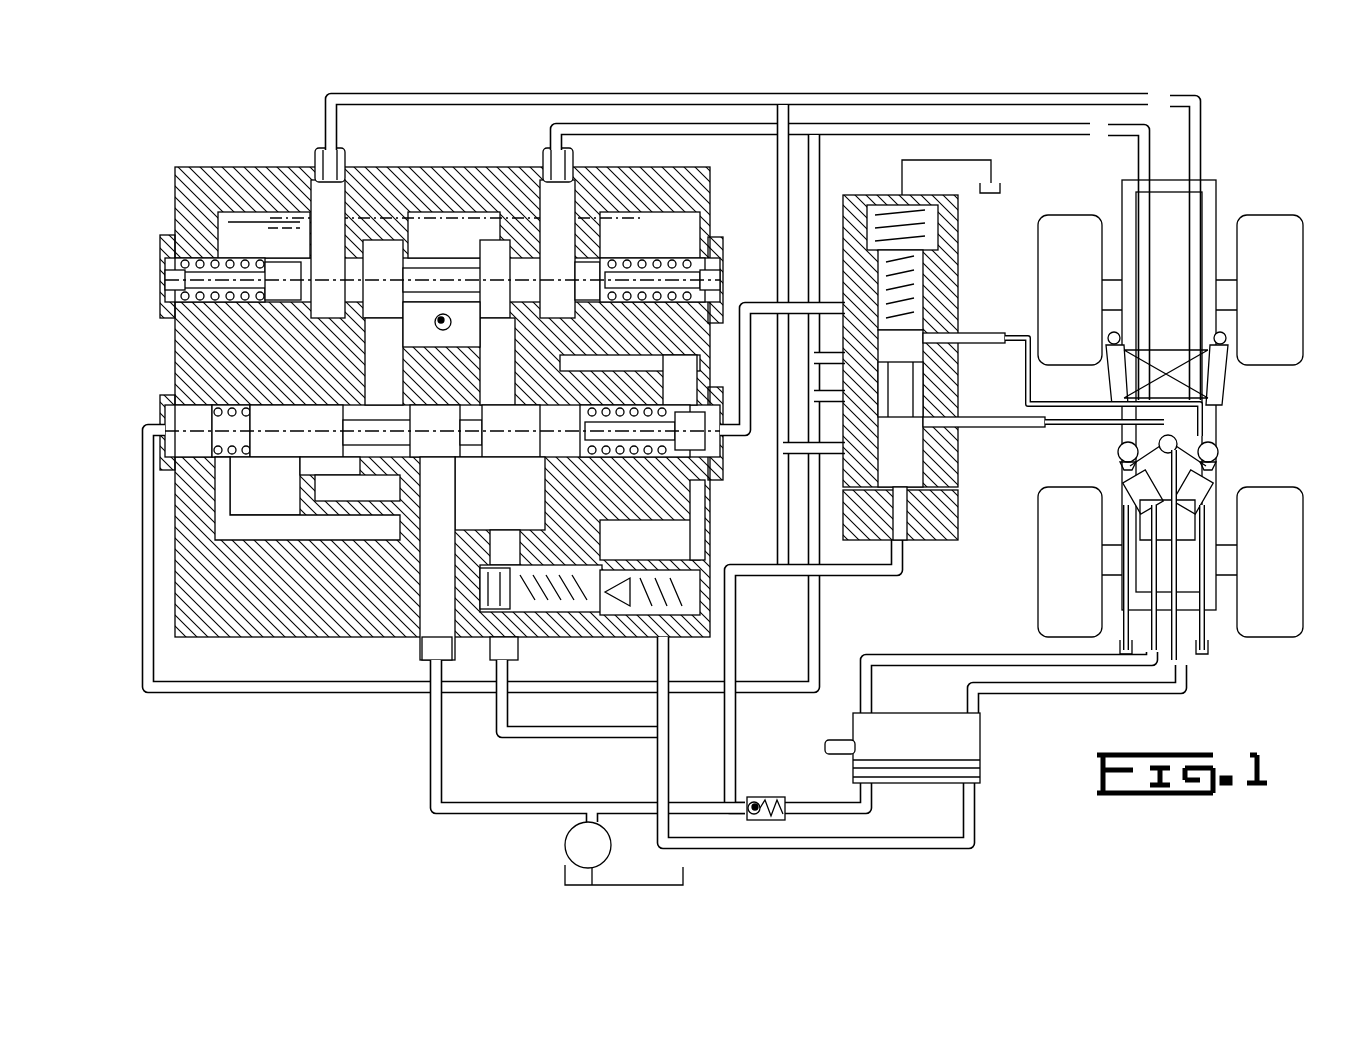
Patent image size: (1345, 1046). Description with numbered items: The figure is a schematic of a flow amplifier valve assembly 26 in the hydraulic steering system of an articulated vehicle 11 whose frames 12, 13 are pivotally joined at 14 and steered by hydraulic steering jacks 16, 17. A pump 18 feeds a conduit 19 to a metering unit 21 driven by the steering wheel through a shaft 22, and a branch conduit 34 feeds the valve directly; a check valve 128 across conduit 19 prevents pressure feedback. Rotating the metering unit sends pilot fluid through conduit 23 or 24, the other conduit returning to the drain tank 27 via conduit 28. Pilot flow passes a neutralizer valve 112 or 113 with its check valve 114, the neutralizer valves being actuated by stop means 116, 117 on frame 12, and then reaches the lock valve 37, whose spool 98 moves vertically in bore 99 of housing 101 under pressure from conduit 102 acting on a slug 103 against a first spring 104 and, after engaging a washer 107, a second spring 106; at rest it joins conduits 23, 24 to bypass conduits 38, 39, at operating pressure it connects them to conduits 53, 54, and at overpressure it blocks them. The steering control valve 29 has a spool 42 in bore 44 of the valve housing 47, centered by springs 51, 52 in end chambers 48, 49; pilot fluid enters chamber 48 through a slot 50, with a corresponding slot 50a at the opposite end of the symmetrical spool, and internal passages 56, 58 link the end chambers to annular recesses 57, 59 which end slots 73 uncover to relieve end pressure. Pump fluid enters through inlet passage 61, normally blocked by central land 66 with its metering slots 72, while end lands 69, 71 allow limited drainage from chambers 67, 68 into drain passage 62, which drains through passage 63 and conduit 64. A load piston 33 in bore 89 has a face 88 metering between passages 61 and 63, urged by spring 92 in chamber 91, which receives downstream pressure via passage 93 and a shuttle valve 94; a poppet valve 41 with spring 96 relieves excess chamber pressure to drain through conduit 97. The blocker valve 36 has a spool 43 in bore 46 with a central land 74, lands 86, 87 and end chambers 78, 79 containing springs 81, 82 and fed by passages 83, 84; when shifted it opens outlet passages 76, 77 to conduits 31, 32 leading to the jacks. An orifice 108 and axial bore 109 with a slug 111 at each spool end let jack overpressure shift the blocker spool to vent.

The articulated vehicle 11 is at (1154, 409).
The frame 12 is at (1218, 200).
The frame 13 is at (1212, 500).
The pivot 14 is at (1176, 440).
The hydraulic steering jack 16 is at (1108, 375).
The hydraulic steering jack 17 is at (1226, 375).
The pump 18 is at (565, 845).
The conduit 19 is at (700, 802).
The metering unit 21 is at (900, 748).
The shaft 22 is at (826, 740).
The conduit 23 is at (930, 655).
The conduit 24 is at (1100, 694).
The flow amplifying valve assembly 26 is at (846, 146).
The drain tank 27 is at (686, 870).
The conduit 28 is at (880, 850).
The steering control valve 29 is at (162, 400).
The conduit 31 is at (488, 94).
The conduit 32 is at (672, 136).
The load piston 33 is at (528, 650).
The conduit 34 is at (430, 748).
The blocker valve 36 is at (214, 252).
The lock valve 37 is at (944, 350).
The bypass conduit 38 is at (777, 164).
The bypass conduit 39 is at (820, 165).
The poppet valve 41 is at (624, 620).
The steering control spool 42 is at (342, 468).
The blocker spool 43 is at (262, 258).
The steering spool bore 44 is at (382, 468).
The blocker spool bore 46 is at (426, 256).
The valve housing 47 is at (218, 178).
The end chamber 48 is at (252, 394).
The end chamber 49 is at (690, 460).
The slot 50 is at (162, 418).
The port 50a is at (712, 390).
The centering spring 51 is at (196, 457).
The centering spring 52 is at (690, 470).
The conduit 53 is at (154, 656).
The conduit 54 is at (742, 440).
The internal passage 56 is at (300, 540).
The annular recess 57 is at (612, 462).
The internal passage 58 is at (300, 350).
The annular recess 59 is at (270, 470).
The fluid inlet passage 61 is at (437, 558).
The drain passage 62 is at (500, 493).
The internal passage 63 is at (505, 547).
The conduit 64 is at (578, 738).
The central land 66 is at (435, 431).
The chamber 67 is at (384, 361).
The chamber 68 is at (497, 361).
The land 69 is at (304, 434).
The land 71 is at (500, 431).
The slot 72 is at (424, 430).
The slot 73 is at (280, 418).
The central land 74 is at (442, 278).
The outlet passage 76 is at (316, 201).
The outlet passage 77 is at (546, 218).
The end chamber 78 is at (180, 288).
The end chamber 79 is at (656, 300).
The centering spring 81 is at (178, 264).
The centering spring 82 is at (672, 250).
The internal passage 83 is at (264, 212).
The internal passage 84 is at (450, 175).
The land 86 is at (383, 279).
The land 87 is at (516, 278).
The face 88 is at (480, 590).
The bore 89 is at (577, 547).
The load piston chamber 91 is at (626, 623).
The spring 92 is at (553, 567).
The internal passage 93 is at (652, 545).
The shuttle valve 94 is at (438, 350).
The spring 96 is at (682, 640).
The conduit 97 is at (670, 708).
The lock valve spool 98 is at (892, 473).
The bore 99 is at (920, 378).
The housing 101 is at (944, 295).
The conduit 102 is at (846, 576).
The slug 103 is at (910, 505).
The spring 104 is at (918, 272).
The spring 106 is at (918, 182).
The washer 107 is at (940, 220).
The orifice 108 is at (320, 302).
The axial bore 109 is at (230, 258).
The slug 111 is at (712, 265).
The neutralizer valve 112 is at (1112, 492).
The neutralizer valve 113 is at (1222, 482).
The check valve 114 is at (1178, 540).
The stop means 116 is at (1106, 466).
The stop means 117 is at (1220, 450).
The check valve 128 is at (782, 820).